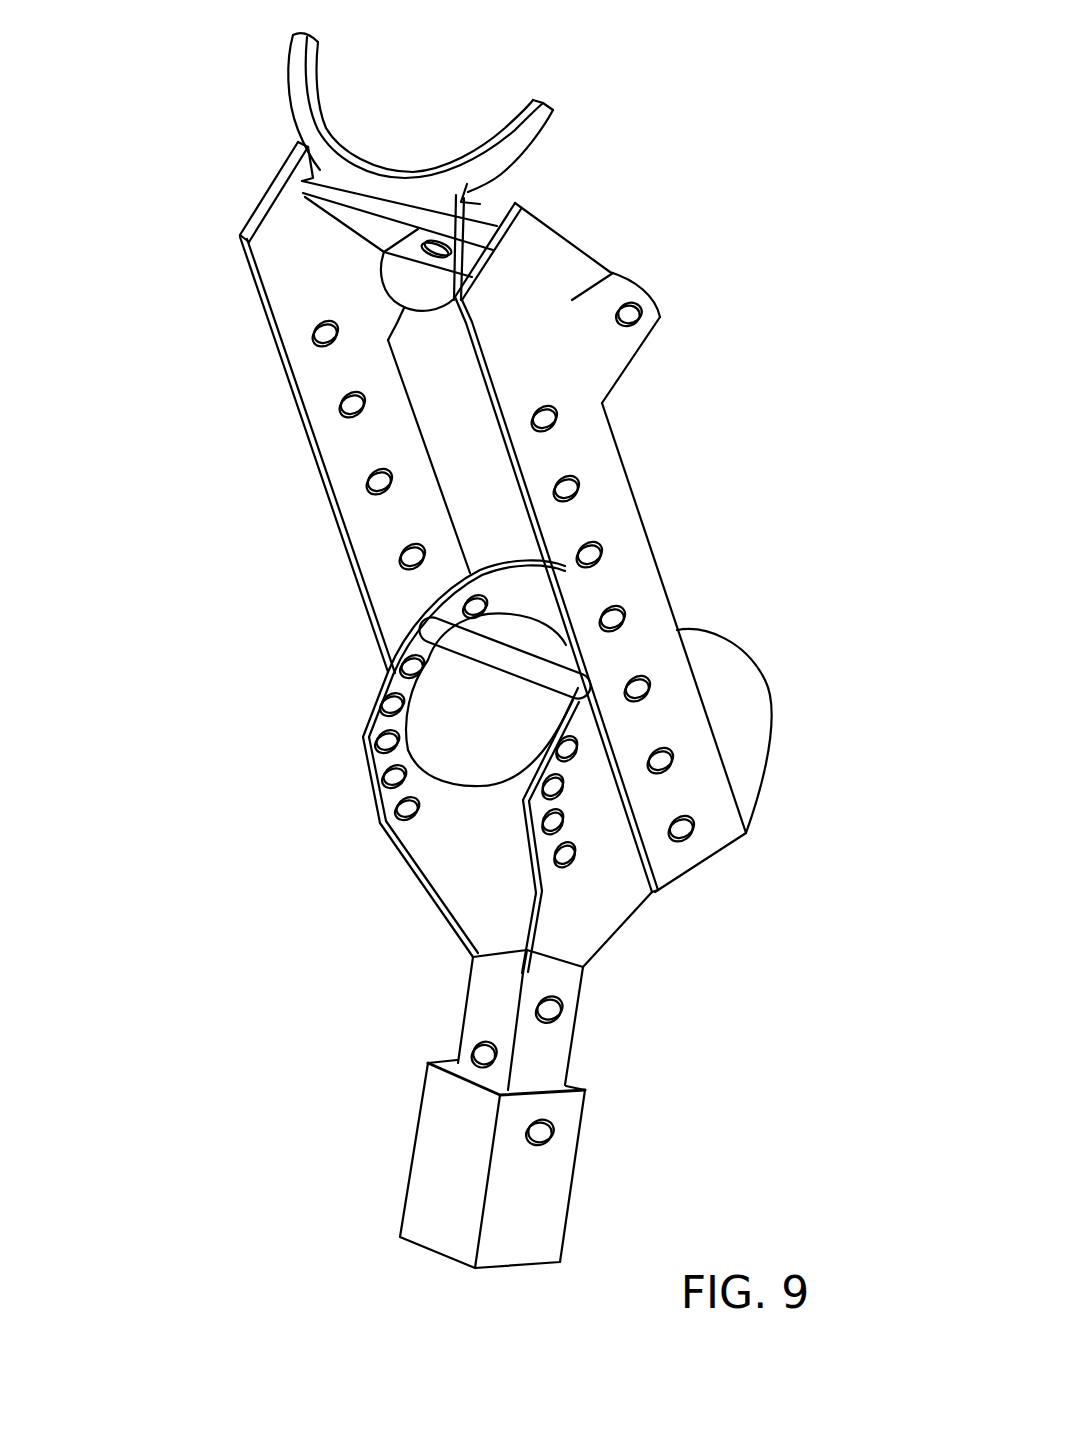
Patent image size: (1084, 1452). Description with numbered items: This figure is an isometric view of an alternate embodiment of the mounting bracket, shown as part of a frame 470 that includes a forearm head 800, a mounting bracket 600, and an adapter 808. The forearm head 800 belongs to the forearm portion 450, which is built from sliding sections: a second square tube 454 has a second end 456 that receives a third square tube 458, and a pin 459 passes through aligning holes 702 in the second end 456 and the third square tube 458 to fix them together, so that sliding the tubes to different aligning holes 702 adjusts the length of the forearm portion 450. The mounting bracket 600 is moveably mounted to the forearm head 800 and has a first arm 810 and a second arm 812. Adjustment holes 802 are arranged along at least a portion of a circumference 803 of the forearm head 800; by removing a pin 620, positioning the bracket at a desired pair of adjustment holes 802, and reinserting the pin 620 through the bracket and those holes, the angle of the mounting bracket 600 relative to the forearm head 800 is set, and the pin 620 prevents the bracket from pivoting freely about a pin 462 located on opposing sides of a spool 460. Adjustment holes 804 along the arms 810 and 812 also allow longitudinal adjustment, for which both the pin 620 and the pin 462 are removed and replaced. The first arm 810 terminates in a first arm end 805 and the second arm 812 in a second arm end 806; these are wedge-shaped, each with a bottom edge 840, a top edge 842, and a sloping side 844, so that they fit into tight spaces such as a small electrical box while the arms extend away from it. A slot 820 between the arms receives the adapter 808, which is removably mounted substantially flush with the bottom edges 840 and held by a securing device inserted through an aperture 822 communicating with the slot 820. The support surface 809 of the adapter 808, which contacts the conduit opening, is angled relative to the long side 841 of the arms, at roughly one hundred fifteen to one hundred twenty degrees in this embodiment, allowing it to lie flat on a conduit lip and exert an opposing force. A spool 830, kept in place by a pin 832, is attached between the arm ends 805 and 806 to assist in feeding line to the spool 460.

The adapter 808 is at (487, 88).
The support surface 809 is at (347, 173).
The bottom edge 840 is at (290, 162).
The first arm end 805 is at (287, 217).
The aperture 822 is at (395, 280).
The spool 830 is at (397, 282).
The long side 841 is at (287, 373).
The first arm 810 is at (373, 523).
The adjustment holes 804 is at (343, 403).
The slot 820 is at (515, 205).
The sloping side 844 is at (577, 250).
The second arm end 806 is at (573, 300).
The pin 832 is at (633, 317).
The top edge 842 is at (613, 390).
The mounting bracket 600 is at (620, 457).
The second arm 812 is at (633, 557).
The pin 462 is at (657, 753).
The forearm head 800 is at (733, 687).
The circumference 803 is at (387, 680).
The adjustment holes 802 is at (387, 773).
The pin 620 is at (463, 665).
The spool 460 is at (510, 787).
The frame 470 is at (850, 745).
The third square tube 458 is at (573, 1033).
The aligning holes 702 is at (480, 1047).
The forearm portion 450 is at (423, 1090).
The second square tube 454 is at (407, 1197).
The second end 456 is at (530, 1197).
The pin 459 is at (583, 1112).